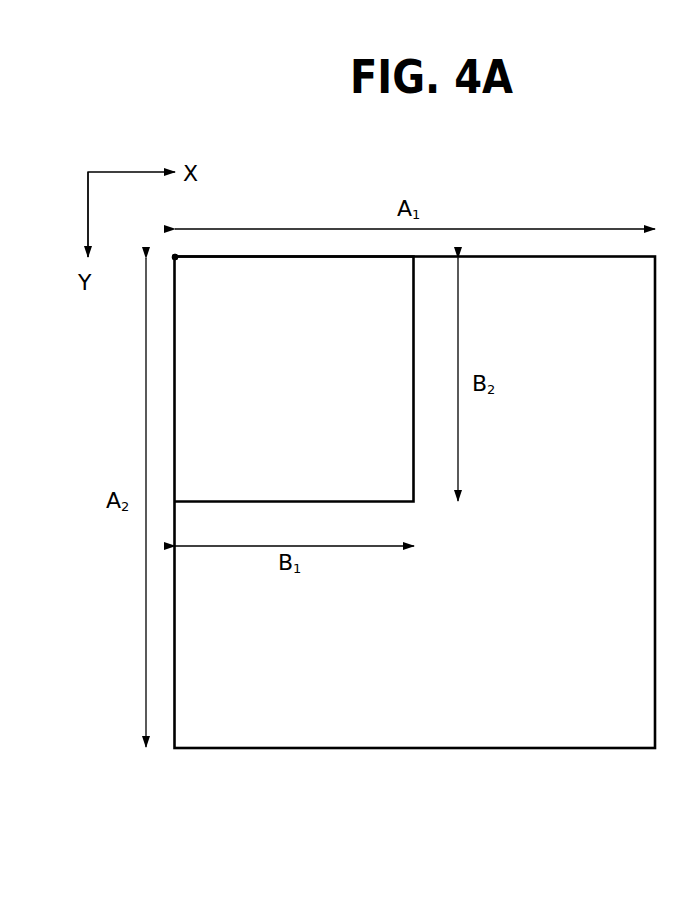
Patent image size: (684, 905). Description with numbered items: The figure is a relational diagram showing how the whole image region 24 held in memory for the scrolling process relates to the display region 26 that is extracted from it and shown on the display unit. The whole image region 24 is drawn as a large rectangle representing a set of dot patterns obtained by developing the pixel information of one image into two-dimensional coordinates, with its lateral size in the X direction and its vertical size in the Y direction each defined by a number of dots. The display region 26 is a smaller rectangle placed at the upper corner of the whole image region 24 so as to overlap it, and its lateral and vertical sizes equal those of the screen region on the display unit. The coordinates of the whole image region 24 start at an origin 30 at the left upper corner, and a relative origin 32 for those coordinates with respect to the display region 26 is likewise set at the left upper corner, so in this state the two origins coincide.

The whole image region 24 is at (373, 749).
The display region 26 is at (306, 428).
The origin 30 is at (175, 257).
The relative origin 32 is at (175, 257).